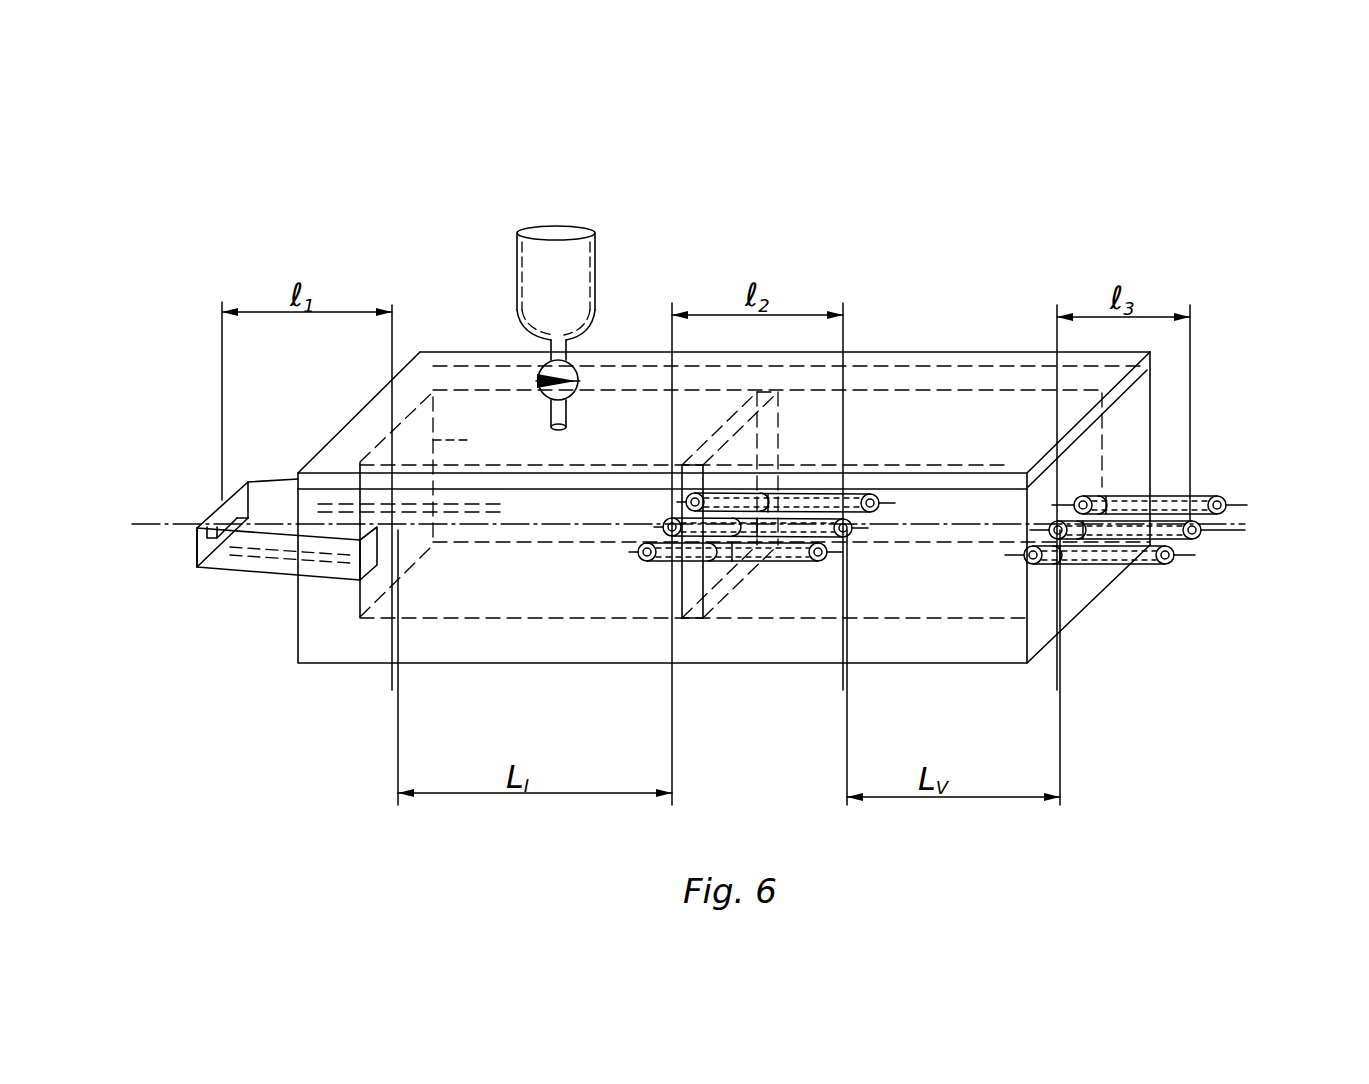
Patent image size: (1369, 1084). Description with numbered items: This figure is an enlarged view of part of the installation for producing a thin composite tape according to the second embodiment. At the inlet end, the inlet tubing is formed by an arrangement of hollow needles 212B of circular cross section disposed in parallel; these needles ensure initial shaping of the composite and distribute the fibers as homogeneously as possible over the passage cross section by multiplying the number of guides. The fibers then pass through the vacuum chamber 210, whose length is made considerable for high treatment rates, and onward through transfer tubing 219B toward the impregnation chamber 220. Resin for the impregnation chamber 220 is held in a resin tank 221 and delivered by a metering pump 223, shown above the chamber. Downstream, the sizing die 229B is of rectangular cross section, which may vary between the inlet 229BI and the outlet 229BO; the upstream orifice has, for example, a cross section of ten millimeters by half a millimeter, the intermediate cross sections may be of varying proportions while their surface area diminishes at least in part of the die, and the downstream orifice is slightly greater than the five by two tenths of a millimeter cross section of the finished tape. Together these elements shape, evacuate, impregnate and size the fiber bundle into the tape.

The vacuum chamber 210 is at (962, 412).
The resin tank 221 is at (548, 255).
The metering pump 223 is at (528, 380).
The impregnation chamber 220 is at (583, 415).
The transfer tubing 219B is at (795, 500).
The hollow needles 212B is at (1205, 490).
The sizing die 229B is at (255, 562).
The inlet 229BI is at (460, 440).
The outlet 229BO is at (197, 527).